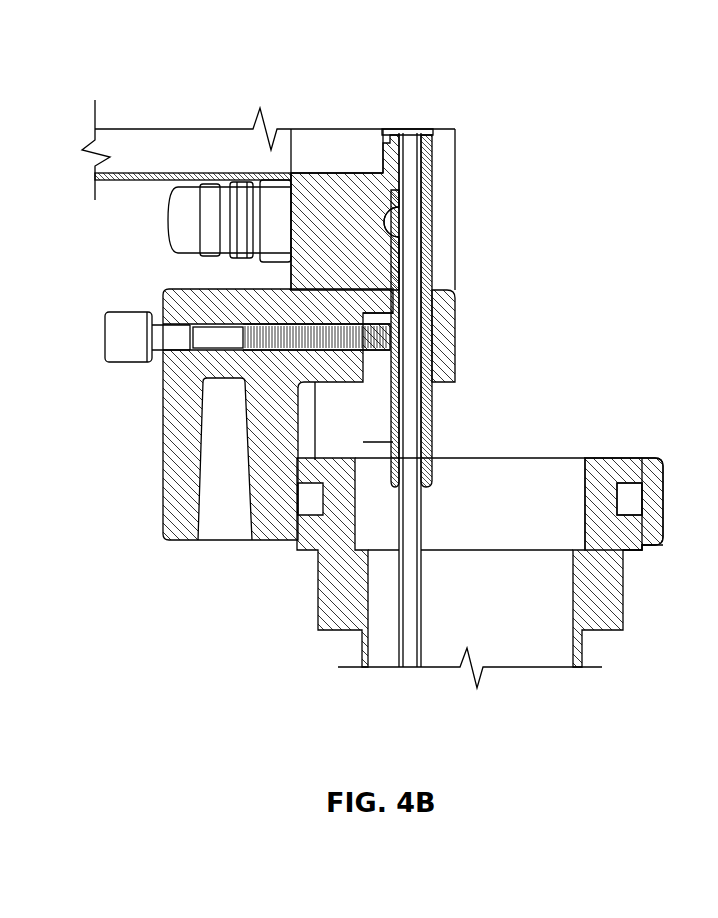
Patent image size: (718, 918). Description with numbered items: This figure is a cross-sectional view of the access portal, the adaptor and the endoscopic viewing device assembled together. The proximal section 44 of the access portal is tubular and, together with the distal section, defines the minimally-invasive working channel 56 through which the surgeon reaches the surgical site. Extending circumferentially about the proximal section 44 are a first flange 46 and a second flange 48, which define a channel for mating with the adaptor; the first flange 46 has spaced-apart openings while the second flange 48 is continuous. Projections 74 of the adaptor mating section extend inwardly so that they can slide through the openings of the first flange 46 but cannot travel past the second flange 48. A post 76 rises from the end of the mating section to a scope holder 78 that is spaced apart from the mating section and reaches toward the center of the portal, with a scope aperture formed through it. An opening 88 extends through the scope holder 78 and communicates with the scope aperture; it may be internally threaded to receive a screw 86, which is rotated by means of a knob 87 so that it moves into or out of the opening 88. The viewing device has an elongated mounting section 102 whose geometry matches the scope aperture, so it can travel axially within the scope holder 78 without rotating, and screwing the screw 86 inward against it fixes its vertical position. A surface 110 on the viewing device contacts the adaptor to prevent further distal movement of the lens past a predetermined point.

The proximal section 44 is at (612, 595).
The first flange 46 is at (612, 470).
The second flange 48 is at (632, 545).
The working channel 56 is at (523, 476).
The projections 74 is at (632, 500).
The post 76 is at (180, 500).
The scope holder 78 is at (442, 336).
The screw 86 is at (205, 340).
The knob 87 is at (118, 333).
The opening 88 is at (230, 336).
The mounting section 102 is at (380, 428).
The surface 110 is at (372, 300).